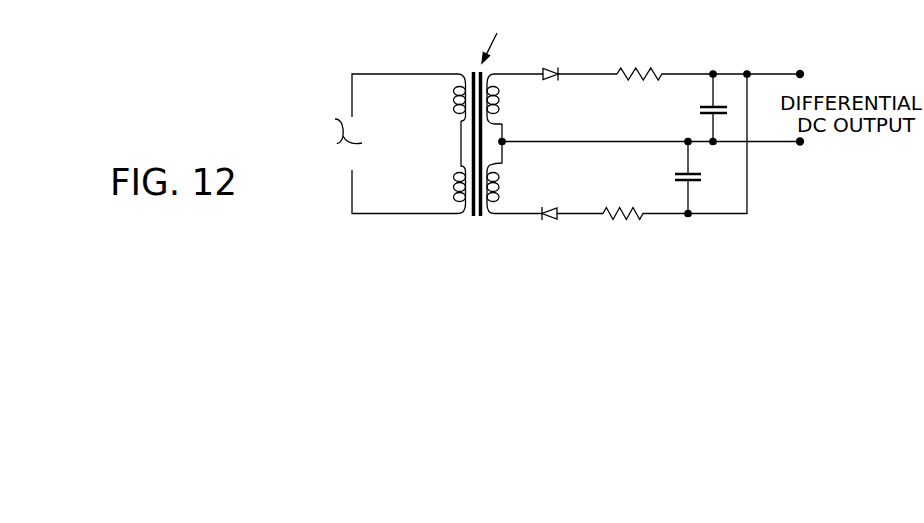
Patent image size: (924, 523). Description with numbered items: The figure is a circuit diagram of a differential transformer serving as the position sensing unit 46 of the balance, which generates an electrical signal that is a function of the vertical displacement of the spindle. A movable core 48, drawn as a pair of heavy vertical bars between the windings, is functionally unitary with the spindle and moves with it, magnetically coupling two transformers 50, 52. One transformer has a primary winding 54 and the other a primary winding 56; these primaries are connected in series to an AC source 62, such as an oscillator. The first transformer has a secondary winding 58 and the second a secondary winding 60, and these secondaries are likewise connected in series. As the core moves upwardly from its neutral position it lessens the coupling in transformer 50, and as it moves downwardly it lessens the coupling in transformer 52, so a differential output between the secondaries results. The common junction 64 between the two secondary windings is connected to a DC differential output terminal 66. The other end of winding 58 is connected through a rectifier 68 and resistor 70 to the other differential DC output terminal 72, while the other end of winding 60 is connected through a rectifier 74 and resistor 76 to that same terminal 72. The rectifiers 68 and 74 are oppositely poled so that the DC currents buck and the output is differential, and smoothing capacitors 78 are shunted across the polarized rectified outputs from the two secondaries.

The position sensing unit 46 is at (373, 52).
The movable core 48 is at (477, 217).
The transformer 50 is at (425, 191).
The transformer 52 is at (418, 102).
The primary winding 54 is at (453, 178).
The primary winding 56 is at (452, 105).
The secondary winding 58 is at (500, 188).
The secondary winding 60 is at (505, 100).
The AC source 62 is at (332, 128).
The common junction 64 is at (506, 139).
The DC differential output terminal 66 is at (802, 144).
The rectifier 68 is at (553, 209).
The resistor 70 is at (637, 220).
The differential DC output terminal 72 is at (803, 71).
The rectifier 74 is at (556, 70).
The resistor 76 is at (658, 70).
The smoothing capacitors 78 is at (697, 110).